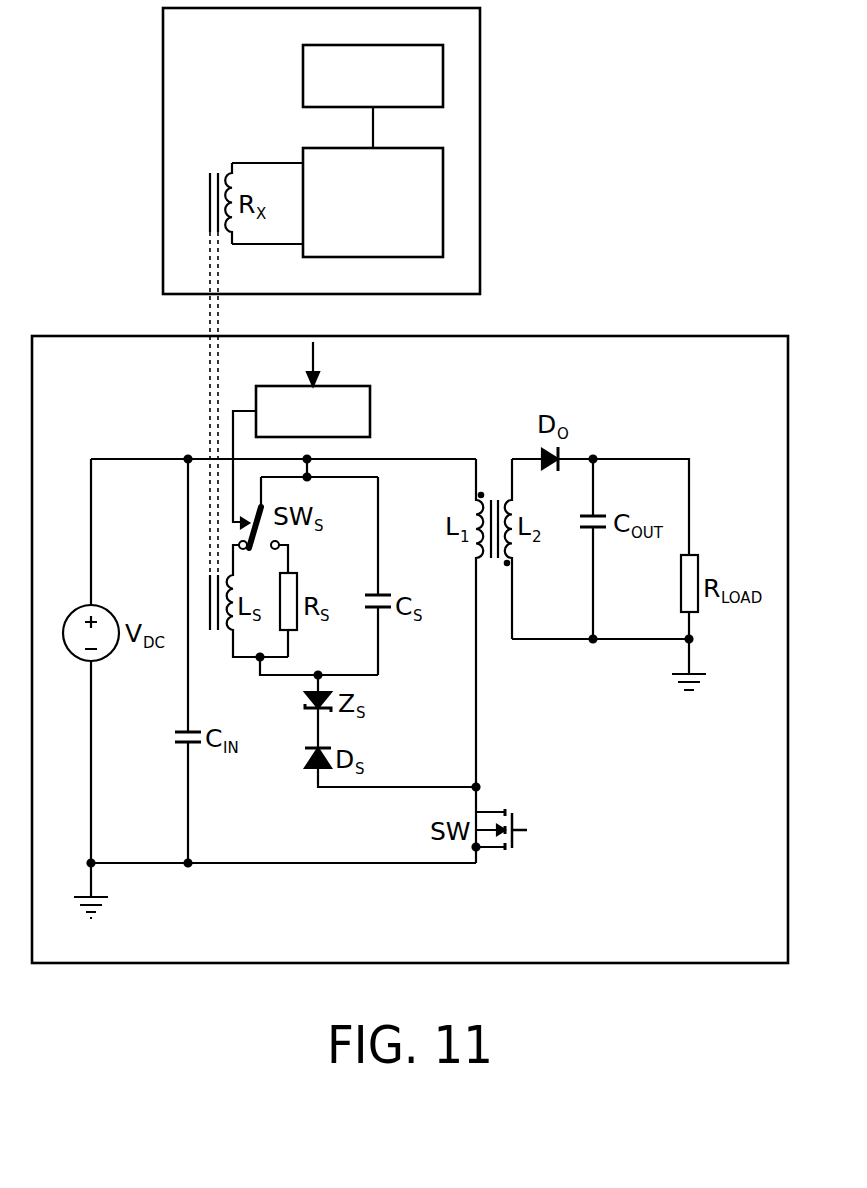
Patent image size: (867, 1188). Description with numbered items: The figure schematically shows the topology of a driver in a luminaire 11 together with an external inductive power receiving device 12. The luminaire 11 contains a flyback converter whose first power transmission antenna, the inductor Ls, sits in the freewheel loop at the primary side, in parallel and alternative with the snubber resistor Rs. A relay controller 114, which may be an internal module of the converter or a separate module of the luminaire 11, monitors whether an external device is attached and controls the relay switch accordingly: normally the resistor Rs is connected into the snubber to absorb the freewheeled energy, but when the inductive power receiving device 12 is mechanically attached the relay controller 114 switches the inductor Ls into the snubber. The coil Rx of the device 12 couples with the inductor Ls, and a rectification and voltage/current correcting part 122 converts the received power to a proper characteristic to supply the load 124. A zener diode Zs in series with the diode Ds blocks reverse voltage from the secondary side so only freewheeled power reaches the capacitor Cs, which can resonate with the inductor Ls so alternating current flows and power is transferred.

The luminaire 11 is at (628, 335).
The inductive power receiving device 12 is at (480, 153).
The relay controller 114 is at (295, 427).
The rectification and voltage/current correcting part 122 is at (355, 218).
The load 124 is at (355, 91).